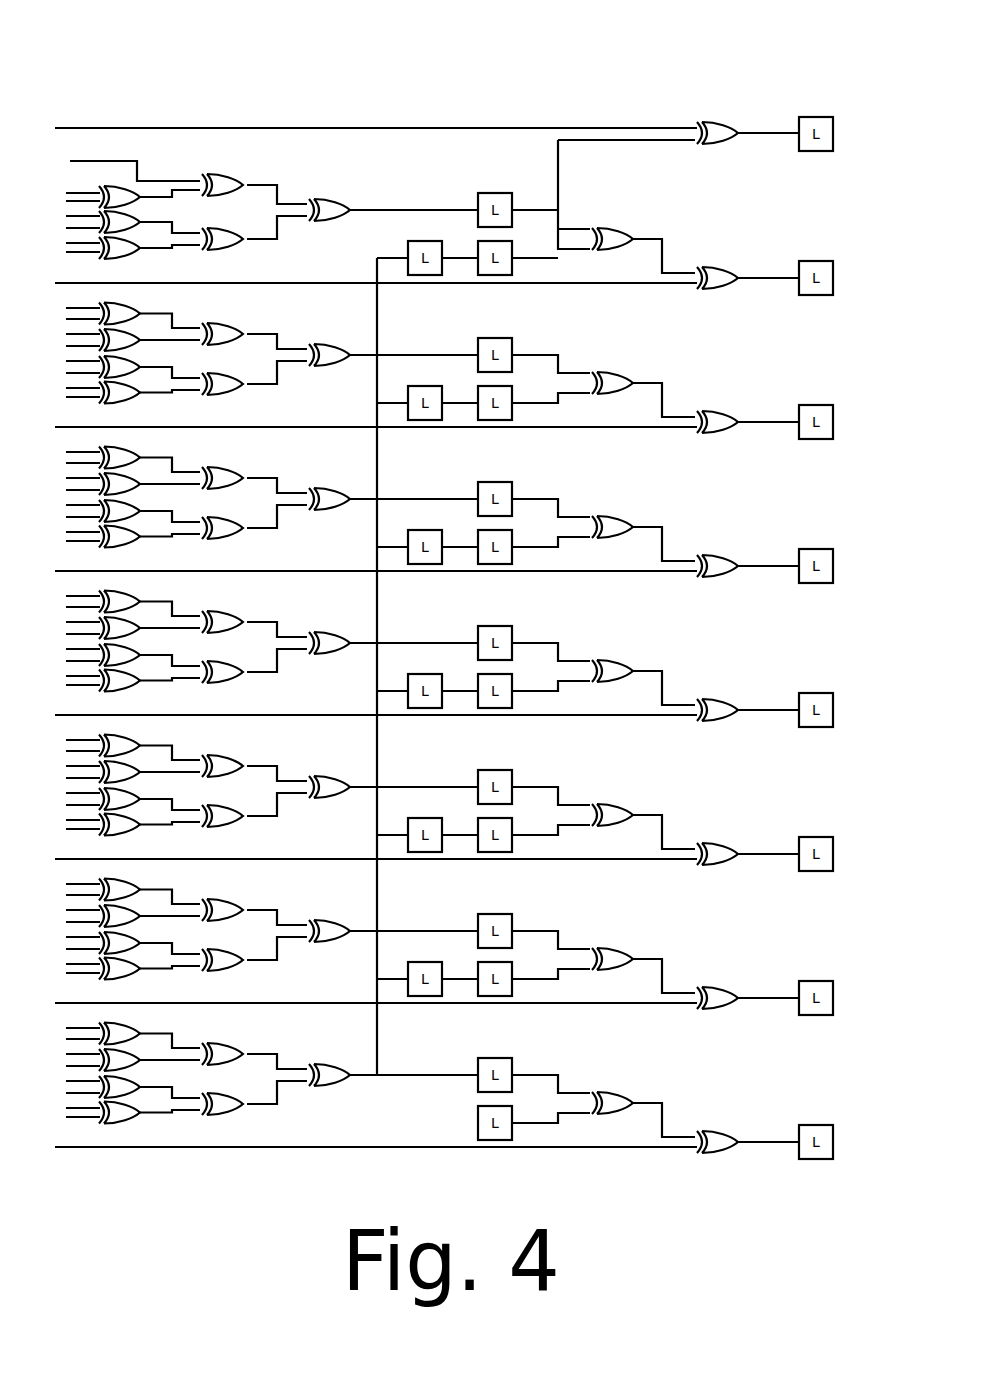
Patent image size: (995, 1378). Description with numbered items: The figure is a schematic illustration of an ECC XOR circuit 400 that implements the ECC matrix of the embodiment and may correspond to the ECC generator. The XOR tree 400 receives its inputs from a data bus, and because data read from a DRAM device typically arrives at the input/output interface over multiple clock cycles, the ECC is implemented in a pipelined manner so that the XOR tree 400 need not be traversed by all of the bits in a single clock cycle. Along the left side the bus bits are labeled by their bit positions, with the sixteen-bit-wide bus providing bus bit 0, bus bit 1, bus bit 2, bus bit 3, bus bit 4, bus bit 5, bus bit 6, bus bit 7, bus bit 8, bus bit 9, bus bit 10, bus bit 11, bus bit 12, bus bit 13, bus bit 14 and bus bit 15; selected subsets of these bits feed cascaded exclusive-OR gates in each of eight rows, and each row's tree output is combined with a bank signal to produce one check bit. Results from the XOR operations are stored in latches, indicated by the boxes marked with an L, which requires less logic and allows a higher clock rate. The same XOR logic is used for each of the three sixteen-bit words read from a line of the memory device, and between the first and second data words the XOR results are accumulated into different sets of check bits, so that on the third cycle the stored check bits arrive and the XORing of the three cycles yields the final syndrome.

The XOR circuit 400 is at (141, 18).
The bus bit 0 is at (77, 397).
The bus bit 1 is at (77, 252).
The bus bit 2 is at (77, 532).
The bus bit 3 is at (77, 243).
The bus bit 4 is at (77, 373).
The bus bit 5 is at (77, 228).
The bus bit 6 is at (77, 505).
The bus bit 7 is at (77, 216).
The bus bit 8 is at (77, 634).
The bus bit 9 is at (77, 201).
The bus bit 10 is at (73, 334).
The bus bit 11 is at (73, 478).
The bus bit 12 is at (73, 463).
The bus bit 13 is at (73, 193).
The bus bit 14 is at (73, 596).
The bus bit 15 is at (123, 168).